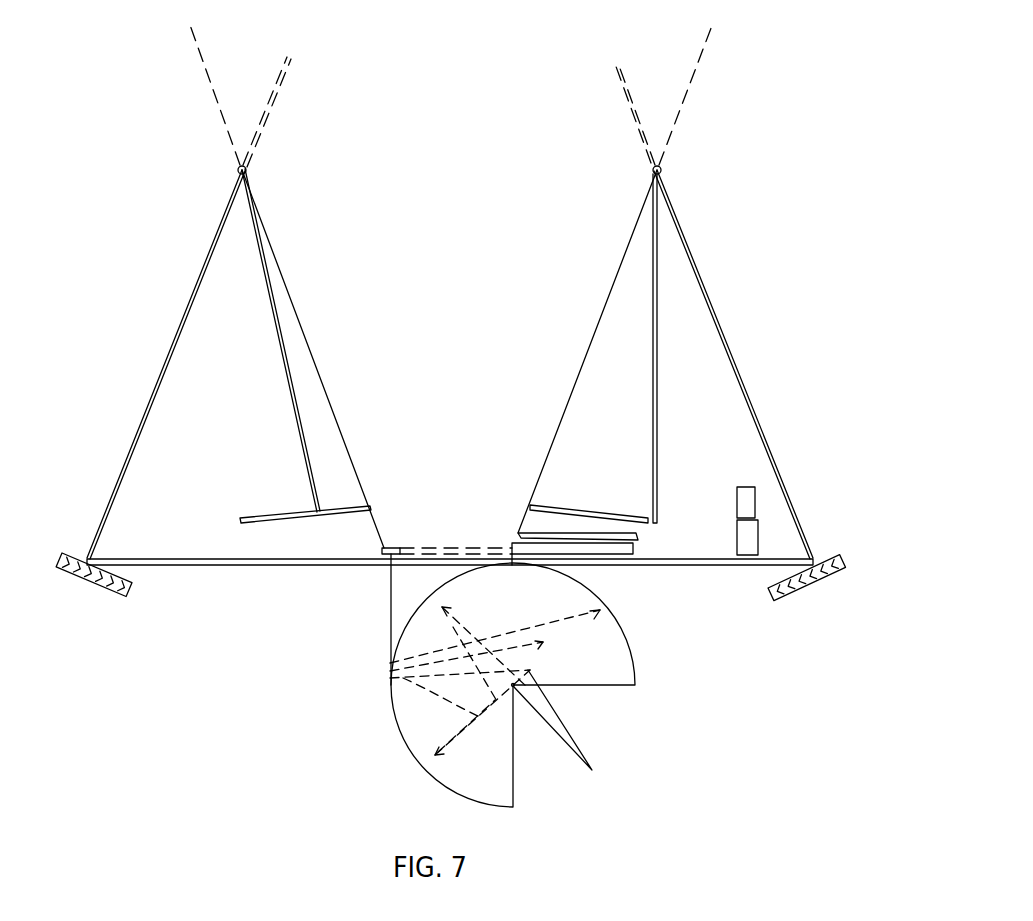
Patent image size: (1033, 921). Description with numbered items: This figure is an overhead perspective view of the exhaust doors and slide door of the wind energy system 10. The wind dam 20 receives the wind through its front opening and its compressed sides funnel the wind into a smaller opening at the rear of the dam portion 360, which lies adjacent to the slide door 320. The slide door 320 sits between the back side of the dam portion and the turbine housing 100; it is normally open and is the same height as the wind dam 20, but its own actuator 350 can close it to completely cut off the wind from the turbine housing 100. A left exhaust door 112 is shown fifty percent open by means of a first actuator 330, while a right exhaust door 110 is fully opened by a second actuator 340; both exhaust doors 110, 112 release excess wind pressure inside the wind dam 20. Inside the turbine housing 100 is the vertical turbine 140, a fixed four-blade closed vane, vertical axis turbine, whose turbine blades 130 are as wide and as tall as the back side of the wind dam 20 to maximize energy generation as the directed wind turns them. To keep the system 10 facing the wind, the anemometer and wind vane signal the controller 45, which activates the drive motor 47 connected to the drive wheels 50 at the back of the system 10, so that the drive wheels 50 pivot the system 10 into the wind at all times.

The system 10 is at (752, 58).
The wind dam 20 is at (459, 258).
The controller 45 is at (748, 500).
The drive motor 47 is at (752, 537).
The drive wheel 50 is at (99, 589).
The turbine housing 100 is at (388, 605).
The right exhaust door 110 is at (657, 462).
The left exhaust door 112 is at (287, 373).
The turbine blades 130 is at (384, 676).
The vertical turbine 140 is at (551, 687).
The slide door 320 is at (527, 552).
The first actuator 330 is at (328, 518).
The second actuator 340 is at (648, 524).
The actuator 350 is at (637, 542).
The rear of the dam portion 360 is at (429, 553).